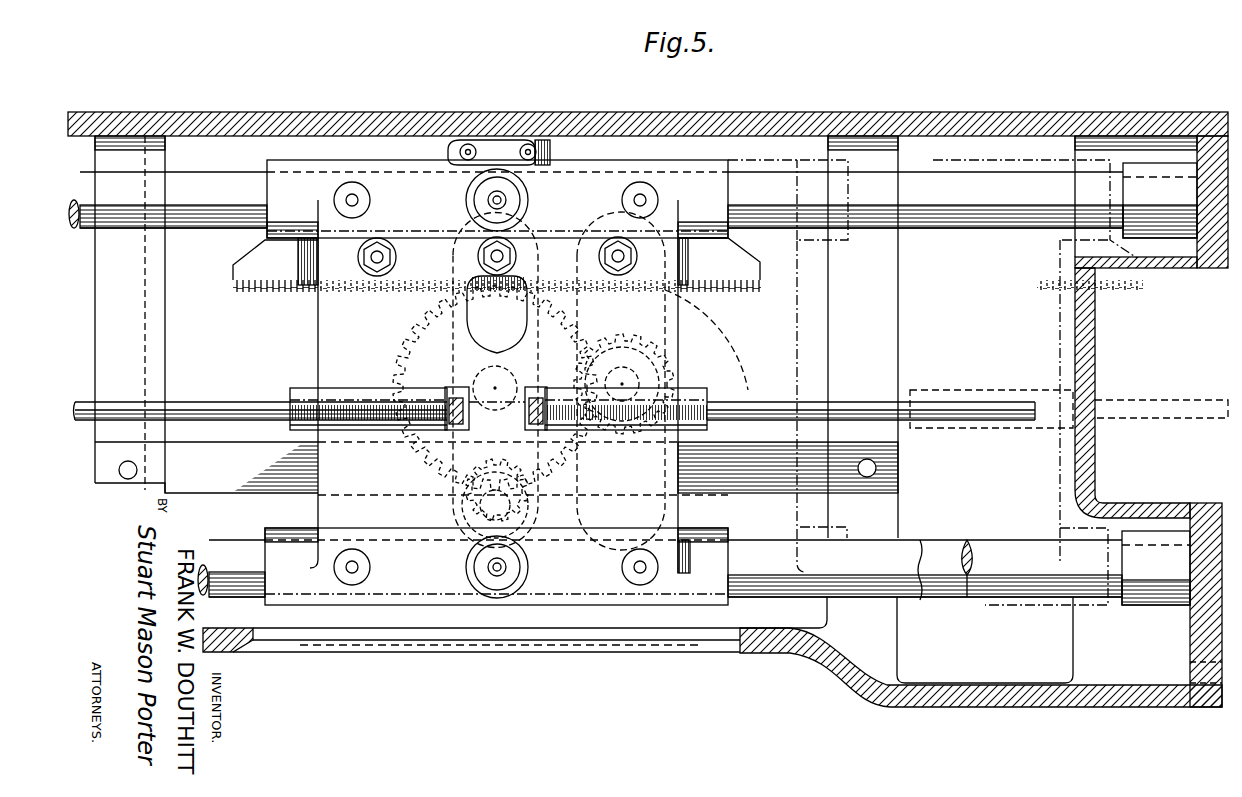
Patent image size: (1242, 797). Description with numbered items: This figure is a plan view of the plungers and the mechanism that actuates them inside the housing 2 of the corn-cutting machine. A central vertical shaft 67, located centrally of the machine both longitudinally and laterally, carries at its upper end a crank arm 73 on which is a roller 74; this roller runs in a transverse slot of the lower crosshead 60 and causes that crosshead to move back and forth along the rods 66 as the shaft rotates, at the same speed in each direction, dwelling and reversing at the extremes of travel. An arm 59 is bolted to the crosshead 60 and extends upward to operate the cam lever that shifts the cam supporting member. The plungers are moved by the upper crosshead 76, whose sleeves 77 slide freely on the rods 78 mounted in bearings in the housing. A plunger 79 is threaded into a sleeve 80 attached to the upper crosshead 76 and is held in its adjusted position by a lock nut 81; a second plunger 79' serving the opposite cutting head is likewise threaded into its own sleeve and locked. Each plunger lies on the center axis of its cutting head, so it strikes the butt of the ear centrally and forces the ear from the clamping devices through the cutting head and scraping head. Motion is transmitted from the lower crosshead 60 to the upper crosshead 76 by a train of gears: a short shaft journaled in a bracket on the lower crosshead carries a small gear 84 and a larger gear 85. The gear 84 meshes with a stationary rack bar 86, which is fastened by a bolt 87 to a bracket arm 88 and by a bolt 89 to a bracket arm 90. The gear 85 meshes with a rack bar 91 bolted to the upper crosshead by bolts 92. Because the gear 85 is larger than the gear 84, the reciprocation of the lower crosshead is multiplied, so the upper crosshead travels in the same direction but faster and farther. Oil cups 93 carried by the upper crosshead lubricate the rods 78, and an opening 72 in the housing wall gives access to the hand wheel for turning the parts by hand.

The housing 2 is at (928, 698).
The arm 59 is at (446, 150).
The crosshead 60 is at (800, 350).
The rods 66 is at (935, 552).
The central vertical shaft 67 is at (500, 370).
The opening 72 is at (733, 640).
The crank arm 73 is at (541, 350).
The roller 74 is at (628, 350).
The upper crosshead 76 is at (318, 327).
The sleeves 77 is at (283, 175).
The rods 78 is at (197, 180).
The plunger 79 is at (261, 395).
The plunger 79' is at (967, 391).
The sleeve 80 is at (352, 390).
The lock nut 81 is at (458, 392).
The gear 84 is at (500, 341).
The gear 85 is at (478, 313).
The rack bar 86 is at (232, 482).
The bolt 87 is at (137, 470).
The bracket arm 88 is at (155, 272).
The bolt 89 is at (876, 468).
The bracket arm 90 is at (885, 290).
The rack bar 91 is at (745, 270).
The bolts 92 is at (396, 257).
The oil cups 93 is at (512, 200).